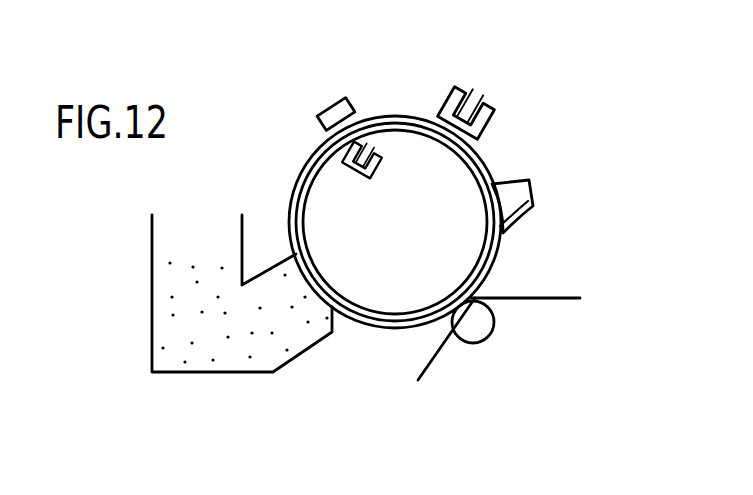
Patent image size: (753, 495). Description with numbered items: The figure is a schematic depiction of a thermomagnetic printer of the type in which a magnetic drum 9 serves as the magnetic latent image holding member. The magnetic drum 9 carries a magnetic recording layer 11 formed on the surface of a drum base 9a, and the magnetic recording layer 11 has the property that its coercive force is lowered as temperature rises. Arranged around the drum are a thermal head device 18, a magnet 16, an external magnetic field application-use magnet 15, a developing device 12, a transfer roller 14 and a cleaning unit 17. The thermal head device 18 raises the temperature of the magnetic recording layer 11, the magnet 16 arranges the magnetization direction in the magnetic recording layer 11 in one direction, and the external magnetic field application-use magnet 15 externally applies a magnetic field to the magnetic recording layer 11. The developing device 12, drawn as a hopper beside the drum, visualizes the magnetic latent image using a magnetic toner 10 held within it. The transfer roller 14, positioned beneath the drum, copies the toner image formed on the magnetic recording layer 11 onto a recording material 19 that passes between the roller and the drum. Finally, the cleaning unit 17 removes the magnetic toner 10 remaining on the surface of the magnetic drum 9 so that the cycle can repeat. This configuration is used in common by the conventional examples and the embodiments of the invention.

The magnetic drum 9 is at (387, 330).
The drum base 9a is at (487, 237).
The magnetic toner 10 is at (165, 291).
The magnetic recording layer 11 is at (480, 152).
The developing device 12 is at (207, 373).
The transfer roller 14 is at (477, 328).
The external magnetic field application-use magnet 15 is at (376, 160).
The magnet 16 is at (448, 102).
The cleaning unit 17 is at (516, 190).
The thermal head device 18 is at (333, 110).
The recording material 19 is at (565, 300).